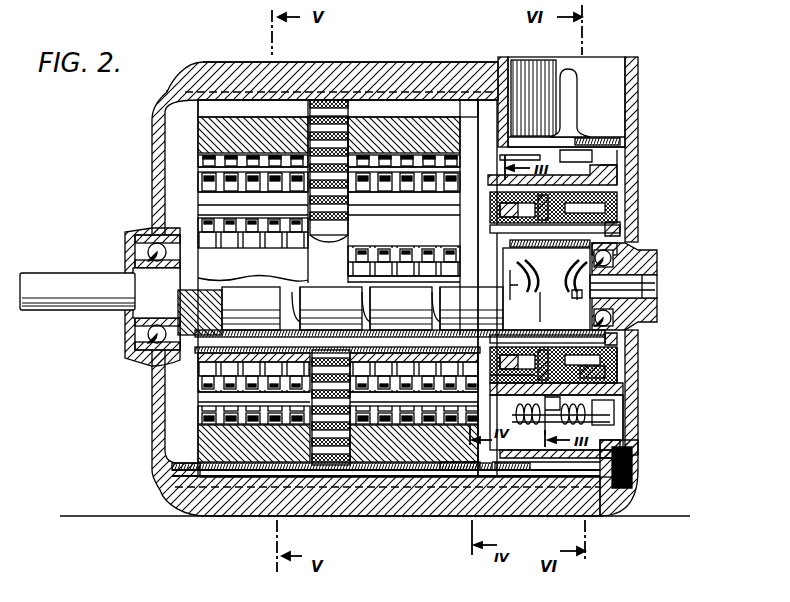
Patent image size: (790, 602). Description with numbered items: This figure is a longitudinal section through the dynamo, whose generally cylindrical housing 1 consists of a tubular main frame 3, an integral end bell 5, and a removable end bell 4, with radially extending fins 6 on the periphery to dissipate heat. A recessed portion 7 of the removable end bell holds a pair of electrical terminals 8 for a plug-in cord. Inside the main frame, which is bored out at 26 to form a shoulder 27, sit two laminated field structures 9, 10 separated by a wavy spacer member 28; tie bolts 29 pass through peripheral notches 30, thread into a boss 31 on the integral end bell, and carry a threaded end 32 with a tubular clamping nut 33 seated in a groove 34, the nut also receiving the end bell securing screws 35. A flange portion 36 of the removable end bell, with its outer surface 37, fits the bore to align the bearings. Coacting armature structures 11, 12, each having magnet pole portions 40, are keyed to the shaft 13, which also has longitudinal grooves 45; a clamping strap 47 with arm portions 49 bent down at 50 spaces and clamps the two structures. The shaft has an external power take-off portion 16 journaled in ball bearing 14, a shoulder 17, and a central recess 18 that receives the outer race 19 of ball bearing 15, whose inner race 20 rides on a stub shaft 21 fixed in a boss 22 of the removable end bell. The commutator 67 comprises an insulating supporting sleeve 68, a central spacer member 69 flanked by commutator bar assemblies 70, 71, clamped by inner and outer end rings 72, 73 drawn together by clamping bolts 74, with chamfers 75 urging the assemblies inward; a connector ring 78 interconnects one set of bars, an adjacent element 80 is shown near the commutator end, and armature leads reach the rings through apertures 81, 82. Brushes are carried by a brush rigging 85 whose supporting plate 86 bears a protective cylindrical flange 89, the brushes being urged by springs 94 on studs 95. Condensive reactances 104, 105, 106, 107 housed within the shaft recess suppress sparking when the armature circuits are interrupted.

The housing 1 is at (380, 68).
The main frame 3 is at (404, 72).
The removable end bell 4 is at (641, 103).
The end bell 5 is at (150, 185).
The fins 6 is at (436, 78).
The portion 7 is at (510, 64).
The electrical terminals 8 is at (578, 100).
The field structure 9 is at (214, 136).
The field structure 10 is at (430, 148).
The armature structure 11 is at (224, 199).
The armature structure 12 is at (470, 249).
The shaft 13 is at (72, 271).
The ball bearing 14 is at (152, 334).
The ball bearing 15 is at (610, 257).
The external power take-off portion 16 is at (72, 318).
The shoulder 17 is at (140, 362).
The central recess 18 is at (565, 333).
The outer race 19 is at (610, 333).
The inner race 20 is at (657, 298).
The stub shaft 21 is at (658, 281).
The boss 22 is at (650, 262).
The bored out portion 26 is at (473, 100).
The shoulder 27 is at (198, 117).
The spacer member 28 is at (330, 100).
The tie bolts 29 is at (364, 472).
The notches 30 is at (242, 108).
The internally threaded boss 31 is at (193, 462).
The threaded outer end 32 is at (455, 478).
The clamping nut 33 is at (507, 478).
The groove 34 is at (482, 478).
The end bell securing screws 35 is at (600, 500).
The flange portion 36 is at (470, 191).
The outer surface 37 is at (483, 110).
The magnet pole portion 40 is at (206, 220).
The grooves 45 is at (200, 352).
The clamping strap 47 is at (303, 358).
The arm portions 49 is at (338, 382).
The clamped ends 50 is at (325, 288).
The commutator 67 is at (618, 198).
The supporting sleeve 68 is at (608, 358).
The central spacer member 69 is at (654, 386).
The commutator bar assembly 70 is at (490, 194).
The commutator bar assembly 71 is at (625, 366).
The inner end ring 72 is at (495, 370).
The outer end ring 73 is at (612, 342).
The clamping bolts 74 is at (492, 355).
The chamfer 75 is at (490, 390).
The ring 78 is at (505, 228).
The plate 80 is at (641, 166).
The apertures 81 is at (515, 325).
The apertures 82 is at (574, 300).
The brush rigging 85 is at (638, 180).
The supporting plate 86 is at (626, 406).
The cylindrical flange 89 is at (586, 176).
The springs 94 is at (580, 418).
The studs 95 is at (614, 425).
The condensive reactance 104 is at (229, 311).
The condensive reactance 105 is at (331, 308).
The condensive reactance 106 is at (401, 308).
The condensive reactance 107 is at (471, 308).